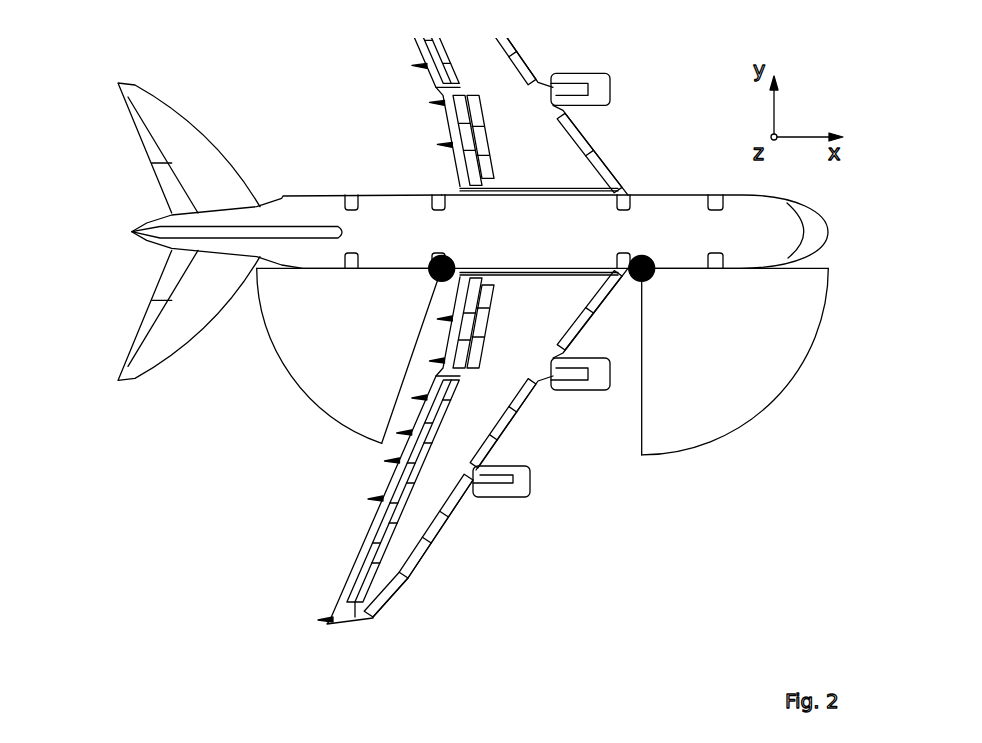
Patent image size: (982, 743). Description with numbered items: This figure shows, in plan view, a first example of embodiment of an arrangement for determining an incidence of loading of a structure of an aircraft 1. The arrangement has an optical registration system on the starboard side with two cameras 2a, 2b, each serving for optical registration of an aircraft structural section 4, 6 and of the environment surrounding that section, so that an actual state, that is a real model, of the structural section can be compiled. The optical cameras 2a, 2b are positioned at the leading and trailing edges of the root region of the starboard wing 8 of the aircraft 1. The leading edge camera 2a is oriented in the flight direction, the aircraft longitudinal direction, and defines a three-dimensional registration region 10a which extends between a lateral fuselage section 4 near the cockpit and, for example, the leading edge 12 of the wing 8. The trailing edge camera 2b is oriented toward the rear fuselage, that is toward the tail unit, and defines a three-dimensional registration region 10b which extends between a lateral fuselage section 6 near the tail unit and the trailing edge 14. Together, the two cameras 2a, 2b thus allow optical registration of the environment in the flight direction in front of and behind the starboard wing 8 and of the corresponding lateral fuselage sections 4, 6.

The aircraft 1 is at (687, 185).
The leading edge camera 2a is at (642, 268).
The trailing edge camera 2b is at (440, 260).
The lateral fuselage section 4 is at (672, 270).
The lateral fuselage section 6 is at (365, 270).
The wing 8 is at (355, 617).
The registration region 10a is at (662, 427).
The registration region 10b is at (335, 392).
The leading edge 12 is at (408, 578).
The trailing edge 14 is at (350, 578).